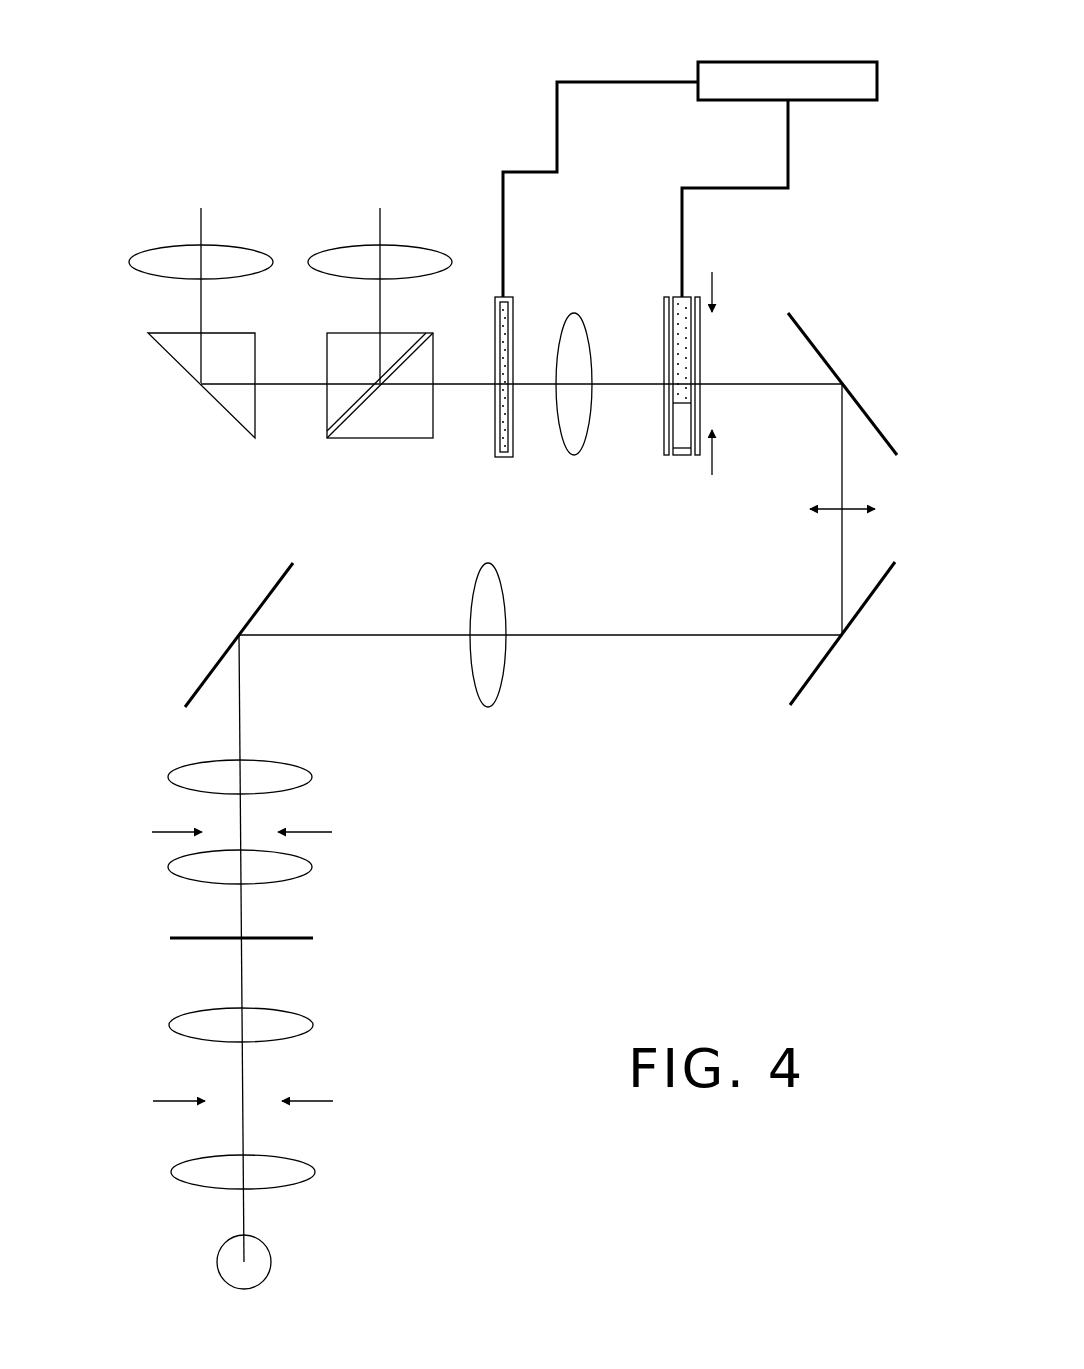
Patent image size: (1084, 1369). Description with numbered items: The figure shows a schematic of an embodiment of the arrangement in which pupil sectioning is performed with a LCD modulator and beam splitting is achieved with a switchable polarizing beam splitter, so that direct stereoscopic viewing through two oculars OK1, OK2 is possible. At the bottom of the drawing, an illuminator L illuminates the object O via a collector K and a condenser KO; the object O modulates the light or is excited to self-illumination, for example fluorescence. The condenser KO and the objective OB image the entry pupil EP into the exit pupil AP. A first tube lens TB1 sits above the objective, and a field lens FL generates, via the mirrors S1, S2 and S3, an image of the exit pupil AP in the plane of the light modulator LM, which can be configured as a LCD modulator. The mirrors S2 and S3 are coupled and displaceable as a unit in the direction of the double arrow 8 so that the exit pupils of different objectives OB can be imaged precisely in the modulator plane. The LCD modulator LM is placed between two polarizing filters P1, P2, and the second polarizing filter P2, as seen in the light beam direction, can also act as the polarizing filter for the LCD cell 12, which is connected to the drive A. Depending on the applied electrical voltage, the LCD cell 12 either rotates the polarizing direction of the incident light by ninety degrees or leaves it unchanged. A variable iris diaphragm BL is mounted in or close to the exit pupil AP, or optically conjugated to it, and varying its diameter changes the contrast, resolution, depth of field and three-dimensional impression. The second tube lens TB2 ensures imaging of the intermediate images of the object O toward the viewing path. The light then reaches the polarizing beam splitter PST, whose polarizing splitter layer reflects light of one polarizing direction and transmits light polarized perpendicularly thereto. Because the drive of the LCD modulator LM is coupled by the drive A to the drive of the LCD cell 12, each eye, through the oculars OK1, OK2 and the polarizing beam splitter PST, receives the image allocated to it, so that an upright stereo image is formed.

The ocular OK1 is at (201, 321).
The ocular OK2 is at (380, 294).
The polarizing beam splitter PST is at (380, 404).
The LCD cell 12 is at (515, 312).
The drive A is at (800, 62).
The tube lens TB2 is at (583, 447).
The light modulator LM is at (688, 300).
The polarizing filter P1 is at (660, 302).
The polarizing filter P2 is at (697, 457).
The variable iris diaphragm BL is at (712, 285).
The mirror S3 is at (835, 368).
The double arrow 8 is at (837, 500).
The mirror S1 is at (257, 608).
The field lens FL is at (488, 657).
The mirror S2 is at (872, 607).
The tube lens TB1 is at (313, 775).
The exit pupil AP is at (258, 835).
The objective OB is at (313, 867).
The object O is at (318, 940).
The condenser KO is at (313, 1025).
The entry pupil EP is at (256, 1102).
The collector K is at (315, 1172).
The illuminator L is at (272, 1262).